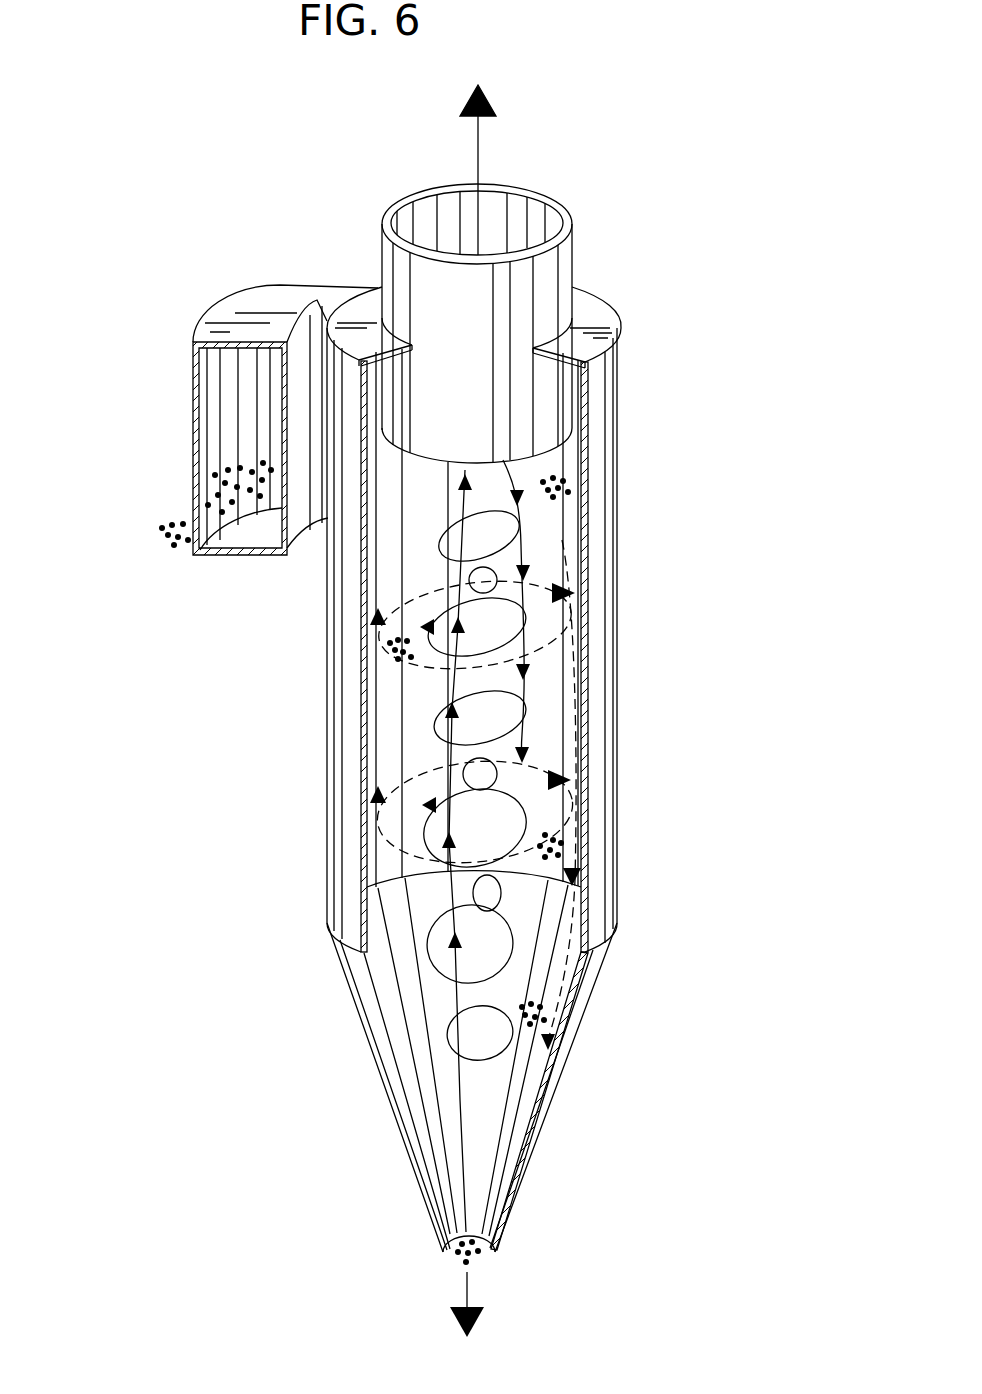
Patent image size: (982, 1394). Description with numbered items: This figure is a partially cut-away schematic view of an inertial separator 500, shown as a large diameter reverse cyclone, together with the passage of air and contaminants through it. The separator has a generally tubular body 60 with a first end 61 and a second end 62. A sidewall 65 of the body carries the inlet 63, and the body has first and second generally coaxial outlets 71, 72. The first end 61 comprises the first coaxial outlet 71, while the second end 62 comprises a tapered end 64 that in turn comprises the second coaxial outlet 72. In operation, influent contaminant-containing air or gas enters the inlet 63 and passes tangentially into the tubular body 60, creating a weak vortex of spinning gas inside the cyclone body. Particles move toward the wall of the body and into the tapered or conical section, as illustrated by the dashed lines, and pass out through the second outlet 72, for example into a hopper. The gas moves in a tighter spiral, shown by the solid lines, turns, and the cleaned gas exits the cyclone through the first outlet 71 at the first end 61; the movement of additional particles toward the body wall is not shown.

The cyclone separator 500 is at (330, 1100).
The first coaxial outlet 71 is at (507, 212).
The first end 61 is at (593, 310).
The inlet 63 is at (230, 375).
The generally tubular body 60 is at (618, 648).
The sidewall 65 is at (355, 488).
The tapered end 64 is at (550, 1109).
The second end 62 is at (493, 1250).
The second coaxial outlet 72 is at (455, 1255).